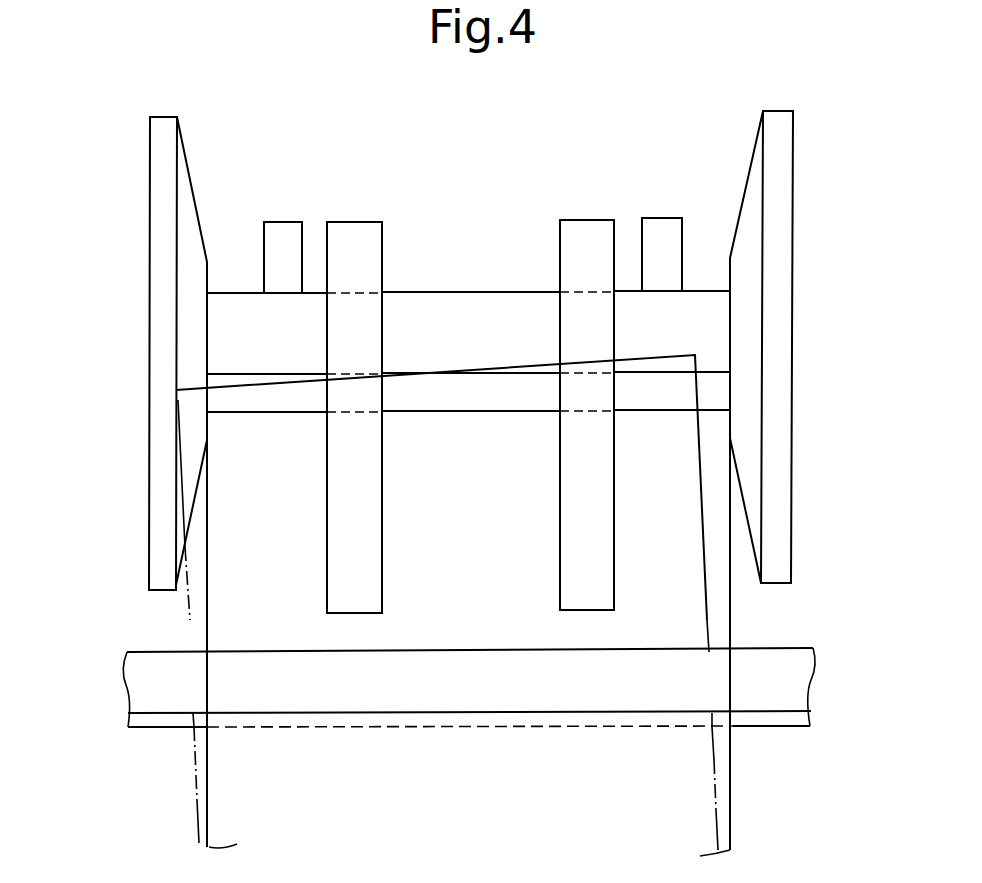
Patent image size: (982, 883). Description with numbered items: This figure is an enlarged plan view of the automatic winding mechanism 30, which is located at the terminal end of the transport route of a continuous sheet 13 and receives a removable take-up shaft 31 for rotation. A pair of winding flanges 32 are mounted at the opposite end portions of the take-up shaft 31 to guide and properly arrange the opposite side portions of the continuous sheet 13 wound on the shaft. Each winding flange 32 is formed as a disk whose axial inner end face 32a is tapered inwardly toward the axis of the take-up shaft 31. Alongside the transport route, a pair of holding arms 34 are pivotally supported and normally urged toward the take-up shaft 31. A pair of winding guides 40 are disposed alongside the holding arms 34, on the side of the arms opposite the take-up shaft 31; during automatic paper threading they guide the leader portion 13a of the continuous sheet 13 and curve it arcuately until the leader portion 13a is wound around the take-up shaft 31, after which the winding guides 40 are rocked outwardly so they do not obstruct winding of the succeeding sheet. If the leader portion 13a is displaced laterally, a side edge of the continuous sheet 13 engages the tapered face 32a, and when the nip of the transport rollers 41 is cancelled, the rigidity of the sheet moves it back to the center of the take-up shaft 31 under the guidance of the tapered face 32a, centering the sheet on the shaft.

The winding mechanism 30 is at (113, 148).
The take-up shaft 31 is at (496, 306).
The winding flange 32 is at (150, 205).
The tapered inner end face 32a is at (187, 190).
The holding arm 34 is at (378, 229).
The winding guide 40 is at (311, 191).
The transport rollers 41 is at (790, 718).
The continuous sheet 13 is at (702, 797).
The leader portion 13a is at (687, 453).